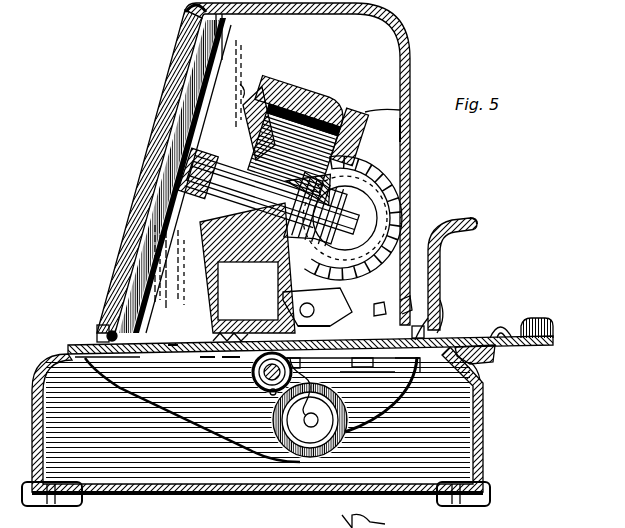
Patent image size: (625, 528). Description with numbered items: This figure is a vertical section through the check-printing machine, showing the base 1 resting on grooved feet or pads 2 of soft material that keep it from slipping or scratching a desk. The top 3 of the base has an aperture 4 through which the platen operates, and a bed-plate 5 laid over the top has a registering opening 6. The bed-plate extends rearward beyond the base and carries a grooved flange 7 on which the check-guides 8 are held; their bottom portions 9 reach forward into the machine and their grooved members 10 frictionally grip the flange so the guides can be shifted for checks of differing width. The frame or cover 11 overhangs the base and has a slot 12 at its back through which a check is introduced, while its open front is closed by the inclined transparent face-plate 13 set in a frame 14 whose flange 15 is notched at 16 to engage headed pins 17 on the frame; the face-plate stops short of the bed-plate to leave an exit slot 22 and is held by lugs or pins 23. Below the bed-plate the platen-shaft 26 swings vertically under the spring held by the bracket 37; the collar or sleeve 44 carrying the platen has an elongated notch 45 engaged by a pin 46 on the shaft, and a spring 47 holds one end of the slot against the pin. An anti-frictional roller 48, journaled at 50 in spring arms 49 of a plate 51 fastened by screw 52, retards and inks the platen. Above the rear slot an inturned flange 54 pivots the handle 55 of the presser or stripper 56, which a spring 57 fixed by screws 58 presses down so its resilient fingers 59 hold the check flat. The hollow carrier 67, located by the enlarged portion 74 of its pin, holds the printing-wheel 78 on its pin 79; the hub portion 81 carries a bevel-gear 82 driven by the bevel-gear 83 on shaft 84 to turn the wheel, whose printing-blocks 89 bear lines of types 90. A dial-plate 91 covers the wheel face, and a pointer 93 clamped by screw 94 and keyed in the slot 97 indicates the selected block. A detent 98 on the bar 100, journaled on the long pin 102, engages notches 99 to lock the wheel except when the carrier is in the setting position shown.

The base 1 is at (236, 478).
The grooved feet or pads 2 is at (56, 501).
The top of the base 3 is at (152, 356).
The aperture 4 is at (222, 358).
The bed-plate 5 is at (172, 344).
The opening 6 is at (258, 370).
The flange or rib 7 is at (492, 360).
The check-guides 8 is at (555, 334).
The bottom portions 9 is at (506, 326).
The grooved members 10 is at (498, 405).
The frame or cover 11 is at (398, 49).
The slot 12 is at (426, 332).
The glass-plate or transparent face-plate 13 is at (165, 100).
The frame 14 is at (186, 8).
The flange 15 is at (223, 34).
The notches 16 is at (108, 357).
The headed pins 17 is at (126, 333).
The exit slot 22 is at (95, 335).
The lugs or pins 23 is at (98, 322).
The platen-shaft 26 is at (272, 395).
The bracket 37 is at (168, 425).
The collar or sleeve 44 is at (330, 393).
The elongated notch or opening 45 is at (190, 391).
The pin 46 is at (315, 329).
The spring 47 is at (289, 456).
The anti-frictional roller 48 is at (334, 440).
The spring arms 49 is at (302, 372).
The journals 50 is at (312, 428).
The plate 51 is at (357, 372).
The screw 52 is at (378, 373).
The inturned and upturned flange 54 is at (440, 316).
The handle 55 is at (441, 262).
The presser or stripper 56 is at (374, 300).
The spring 57 is at (406, 298).
The screws 58 is at (445, 292).
The resilient fingers 59 is at (216, 337).
The carrier 67 is at (404, 130).
The enlarged portion 74 is at (386, 519).
The printing-wheel 78 is at (295, 75).
The pin 79 is at (326, 209).
The hub portion 81 is at (172, 265).
The bevel-gear 82 is at (247, 268).
The bevel-gear 83 is at (398, 195).
The shaft 84 is at (402, 232).
The printing-blocks 89 is at (270, 85).
The types or lines of types 90 is at (297, 90).
The dial-plate 91 is at (246, 93).
The pointer 93 is at (212, 135).
The clamping screw 94 is at (195, 180).
The groove or slot 97 is at (240, 205).
The detent 98 is at (248, 291).
The notches 99 is at (358, 112).
The bar 100 is at (472, 221).
The long pin 102 is at (328, 315).